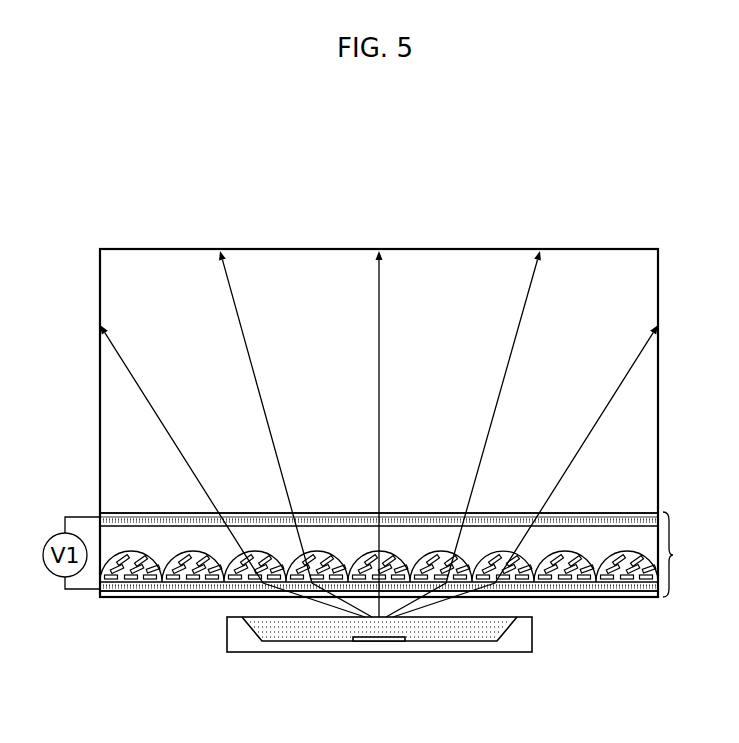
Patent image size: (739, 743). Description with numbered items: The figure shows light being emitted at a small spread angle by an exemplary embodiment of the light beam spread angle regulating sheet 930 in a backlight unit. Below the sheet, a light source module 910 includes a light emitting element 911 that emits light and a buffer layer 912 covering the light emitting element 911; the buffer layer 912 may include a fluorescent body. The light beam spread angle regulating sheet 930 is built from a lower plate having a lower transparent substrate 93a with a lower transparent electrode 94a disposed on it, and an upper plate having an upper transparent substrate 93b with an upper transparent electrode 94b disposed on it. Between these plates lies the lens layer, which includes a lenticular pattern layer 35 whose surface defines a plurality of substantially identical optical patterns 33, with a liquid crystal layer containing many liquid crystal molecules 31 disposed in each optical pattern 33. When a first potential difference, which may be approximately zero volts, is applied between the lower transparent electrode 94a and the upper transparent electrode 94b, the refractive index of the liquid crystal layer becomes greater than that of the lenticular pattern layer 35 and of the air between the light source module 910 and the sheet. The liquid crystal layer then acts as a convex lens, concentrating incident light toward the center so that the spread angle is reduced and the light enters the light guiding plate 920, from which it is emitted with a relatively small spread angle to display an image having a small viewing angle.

The light guiding plate 920 is at (612, 247).
The light beam spread angle regulating sheet 930 is at (408, 554).
The upper transparent substrate 93b is at (140, 513).
The upper transparent electrode 94b is at (122, 520).
The lower transparent substrate 93a is at (120, 597).
The lower transparent electrode 94a is at (180, 590).
The optical pattern 33 is at (565, 553).
The lenticular pattern layer 35 is at (625, 535).
The liquid crystal molecules 31 is at (570, 578).
The light source module 910 is at (448, 653).
The light emitting element 911 is at (377, 642).
The buffer layer 912 is at (293, 632).